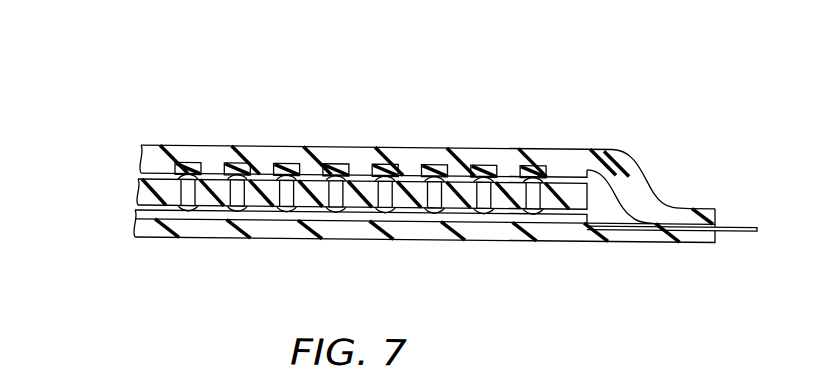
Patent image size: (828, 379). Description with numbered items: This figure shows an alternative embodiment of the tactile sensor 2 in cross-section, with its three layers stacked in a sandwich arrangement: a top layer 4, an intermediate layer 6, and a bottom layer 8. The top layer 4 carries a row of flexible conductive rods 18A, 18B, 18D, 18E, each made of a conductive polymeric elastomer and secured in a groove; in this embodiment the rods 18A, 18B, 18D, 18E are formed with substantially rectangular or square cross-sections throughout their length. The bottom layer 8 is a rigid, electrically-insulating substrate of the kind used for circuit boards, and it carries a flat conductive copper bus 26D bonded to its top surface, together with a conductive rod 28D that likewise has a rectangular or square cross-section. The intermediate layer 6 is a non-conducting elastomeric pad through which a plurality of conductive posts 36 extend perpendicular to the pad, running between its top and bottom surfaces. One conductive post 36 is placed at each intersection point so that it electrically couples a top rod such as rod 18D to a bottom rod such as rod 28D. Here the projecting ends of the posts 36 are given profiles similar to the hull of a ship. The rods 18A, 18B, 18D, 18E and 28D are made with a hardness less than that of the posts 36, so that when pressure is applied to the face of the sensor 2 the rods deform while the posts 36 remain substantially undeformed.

The tactile sensor 2 is at (195, 138).
The top layer 4 is at (138, 158).
The intermediate layer 6 is at (136, 192).
The bottom layer 8 is at (133, 224).
The conductive rod 18A is at (534, 159).
The conductive rod 18B is at (483, 159).
The conductive rod 18D is at (388, 159).
The conductive rod 18E is at (337, 159).
The conductive copper bus 26D is at (215, 215).
The conductive rod 28D is at (266, 210).
The conductive post 36 is at (435, 200).